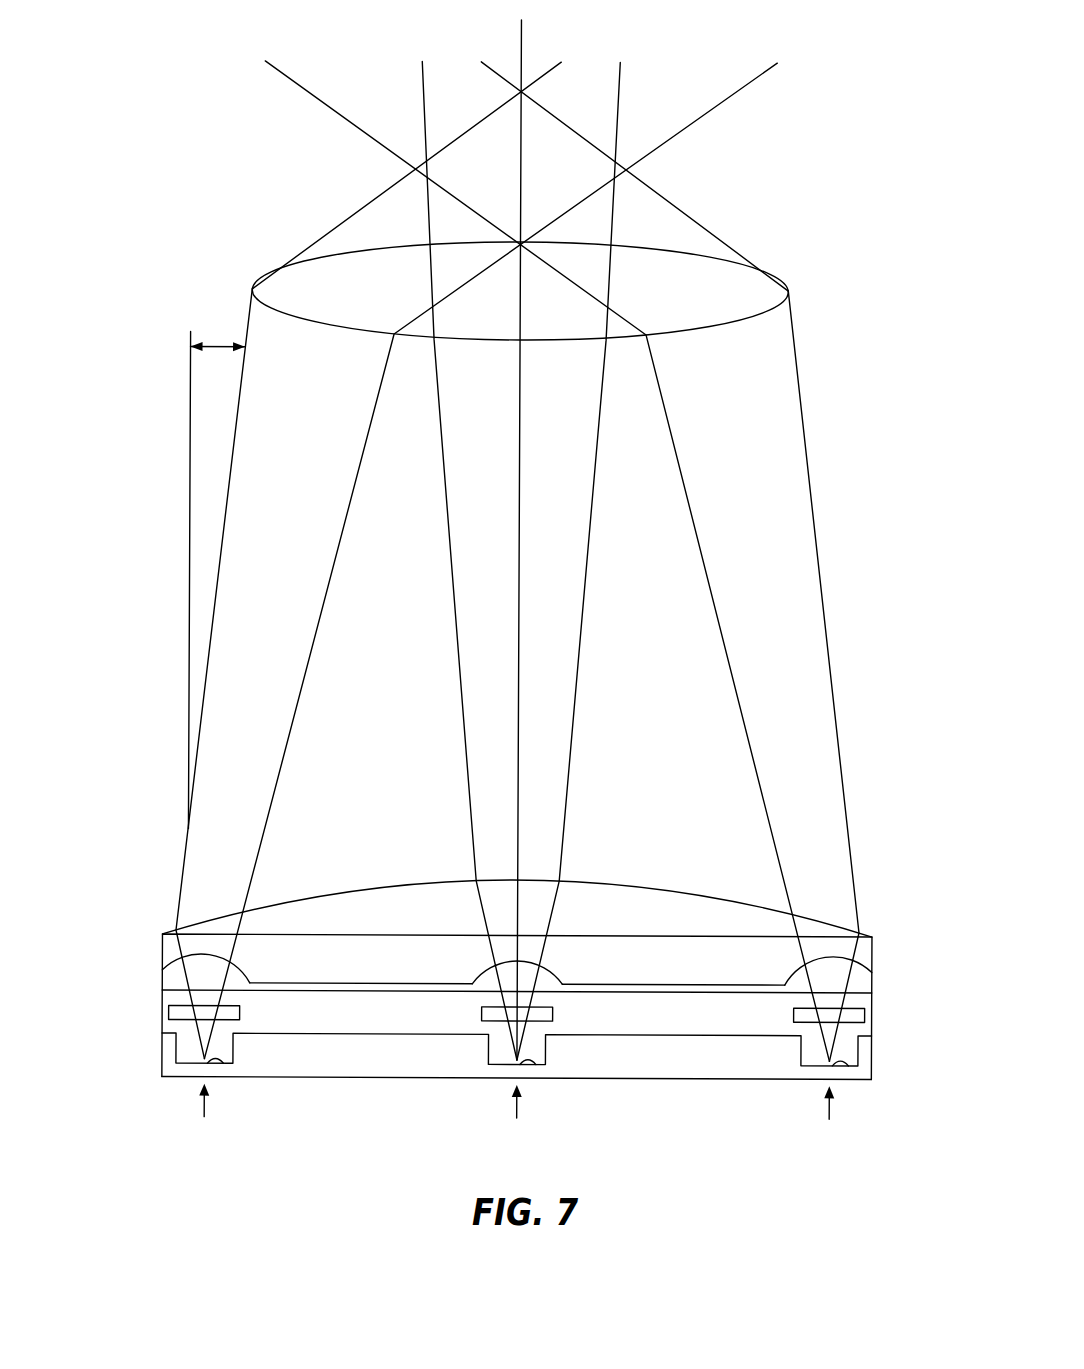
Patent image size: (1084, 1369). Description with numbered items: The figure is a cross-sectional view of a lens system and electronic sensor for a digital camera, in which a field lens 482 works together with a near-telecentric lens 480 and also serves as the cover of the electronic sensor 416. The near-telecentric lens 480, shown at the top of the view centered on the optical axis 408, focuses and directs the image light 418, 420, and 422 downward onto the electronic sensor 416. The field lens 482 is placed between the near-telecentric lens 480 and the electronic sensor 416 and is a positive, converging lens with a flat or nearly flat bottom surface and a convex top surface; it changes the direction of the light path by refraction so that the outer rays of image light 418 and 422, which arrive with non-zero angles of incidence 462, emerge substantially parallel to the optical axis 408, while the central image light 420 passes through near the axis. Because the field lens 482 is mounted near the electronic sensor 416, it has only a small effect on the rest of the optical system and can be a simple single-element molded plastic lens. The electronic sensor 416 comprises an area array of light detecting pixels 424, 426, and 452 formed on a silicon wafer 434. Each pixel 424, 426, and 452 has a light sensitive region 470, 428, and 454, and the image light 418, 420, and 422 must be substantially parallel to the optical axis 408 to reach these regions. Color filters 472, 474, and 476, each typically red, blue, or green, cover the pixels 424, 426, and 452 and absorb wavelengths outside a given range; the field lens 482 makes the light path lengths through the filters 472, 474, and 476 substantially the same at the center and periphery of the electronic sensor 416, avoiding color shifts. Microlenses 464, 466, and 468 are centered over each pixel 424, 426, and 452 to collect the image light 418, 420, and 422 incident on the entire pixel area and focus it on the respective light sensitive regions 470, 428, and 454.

The optical axis 408 is at (520, 40).
The near-telecentric lens 480 is at (773, 277).
The angle of incidence 462 is at (204, 341).
The image light 422 is at (185, 860).
The image light 420 is at (472, 834).
The image light 418 is at (779, 864).
The field lens 482 is at (612, 884).
The electronic sensor 416 is at (134, 998).
The silicon wafer 434 is at (163, 1067).
The microlens 468 is at (245, 972).
The microlens 466 is at (557, 973).
The microlens 464 is at (862, 974).
The color filter 472 is at (241, 1013).
The color filter 474 is at (554, 1014).
The color filter 476 is at (866, 1016).
The light sensitive region 454 is at (220, 1065).
The light sensitive region 428 is at (533, 1065).
The light sensitive region 470 is at (847, 1066).
The pixel 452 is at (204, 1116).
The pixel 426 is at (517, 1118).
The pixel 424 is at (829, 1119).